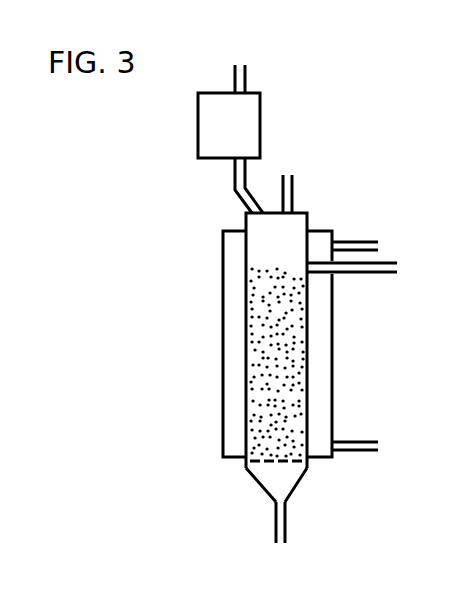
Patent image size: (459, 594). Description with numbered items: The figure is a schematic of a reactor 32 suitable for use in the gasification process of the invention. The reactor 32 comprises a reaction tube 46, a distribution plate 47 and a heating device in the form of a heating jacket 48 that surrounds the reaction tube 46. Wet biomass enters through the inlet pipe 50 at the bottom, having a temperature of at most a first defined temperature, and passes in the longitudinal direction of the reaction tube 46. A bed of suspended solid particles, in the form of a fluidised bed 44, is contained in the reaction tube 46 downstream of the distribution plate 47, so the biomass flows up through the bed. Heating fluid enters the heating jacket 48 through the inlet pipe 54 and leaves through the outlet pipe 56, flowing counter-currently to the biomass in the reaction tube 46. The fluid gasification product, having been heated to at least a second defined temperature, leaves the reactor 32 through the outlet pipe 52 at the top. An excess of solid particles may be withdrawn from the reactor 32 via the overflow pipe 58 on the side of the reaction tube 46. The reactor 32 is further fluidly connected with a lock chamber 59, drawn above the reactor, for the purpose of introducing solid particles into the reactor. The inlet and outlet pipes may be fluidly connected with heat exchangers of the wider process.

The reactor 32 is at (168, 262).
The fluidised bed 44 is at (292, 412).
The reaction tube 46 is at (243, 363).
The distribution plate 47 is at (270, 466).
The heating jacket 48 is at (335, 337).
The inlet pipe 50 is at (290, 518).
The outlet pipe 52 is at (297, 192).
The inlet pipe 54 is at (363, 235).
The outlet pipe 56 is at (360, 455).
The overflow pipe 58 is at (380, 278).
The lock chamber 59 is at (265, 102).